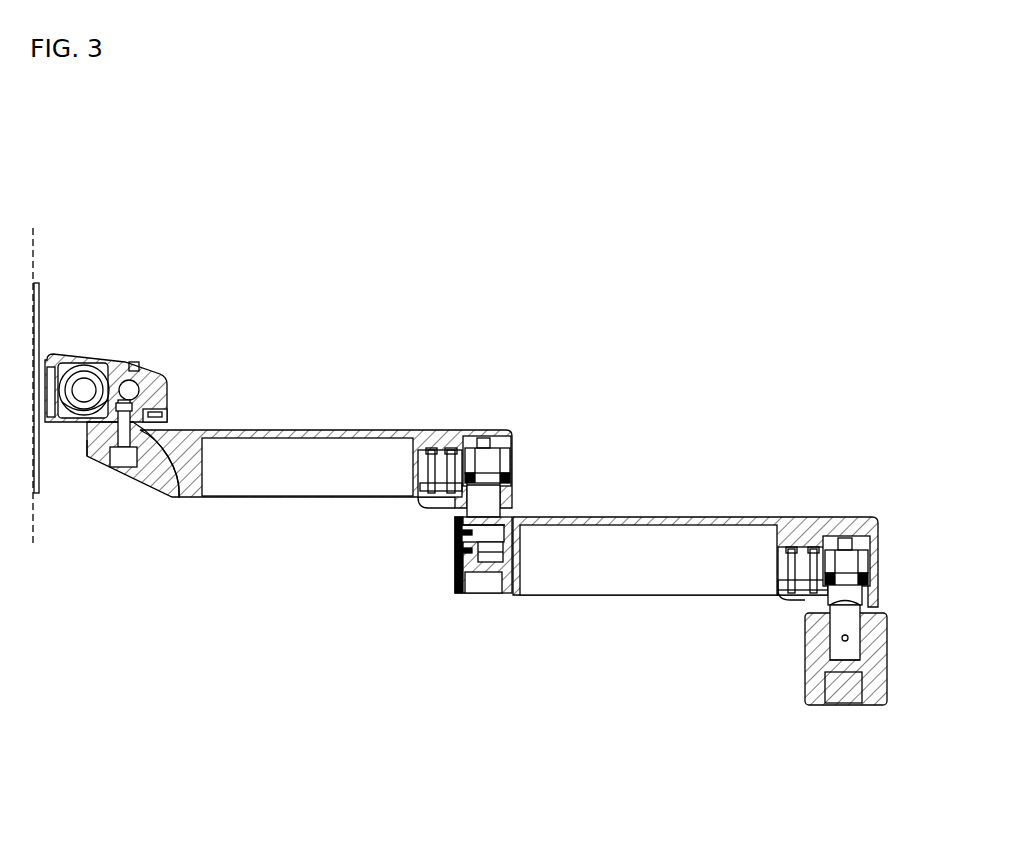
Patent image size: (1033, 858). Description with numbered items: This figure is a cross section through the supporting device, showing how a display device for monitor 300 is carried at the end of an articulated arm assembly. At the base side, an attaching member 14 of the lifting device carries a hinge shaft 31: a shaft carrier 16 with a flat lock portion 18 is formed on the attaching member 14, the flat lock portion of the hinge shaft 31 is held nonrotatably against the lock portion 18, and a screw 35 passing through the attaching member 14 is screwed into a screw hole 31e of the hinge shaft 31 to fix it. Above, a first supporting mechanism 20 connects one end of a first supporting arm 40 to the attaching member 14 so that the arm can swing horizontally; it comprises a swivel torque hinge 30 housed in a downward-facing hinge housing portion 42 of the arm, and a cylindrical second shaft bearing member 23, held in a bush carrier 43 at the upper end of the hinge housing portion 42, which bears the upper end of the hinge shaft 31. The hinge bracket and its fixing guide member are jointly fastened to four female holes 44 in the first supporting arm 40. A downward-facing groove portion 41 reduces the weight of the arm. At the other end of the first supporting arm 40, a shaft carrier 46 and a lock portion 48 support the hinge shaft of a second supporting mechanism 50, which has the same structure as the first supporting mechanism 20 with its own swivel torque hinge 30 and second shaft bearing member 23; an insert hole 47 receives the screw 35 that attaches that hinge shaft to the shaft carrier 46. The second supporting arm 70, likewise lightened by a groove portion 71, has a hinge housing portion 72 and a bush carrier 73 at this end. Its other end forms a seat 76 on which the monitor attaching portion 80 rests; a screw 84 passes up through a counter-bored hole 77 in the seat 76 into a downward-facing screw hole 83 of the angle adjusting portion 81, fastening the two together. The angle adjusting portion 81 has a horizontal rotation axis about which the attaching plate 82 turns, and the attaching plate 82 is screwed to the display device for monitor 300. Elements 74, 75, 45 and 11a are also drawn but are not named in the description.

The display device for monitor 300 is at (42, 248).
The attaching plate 82 is at (39, 335).
The angle adjusting portion 81 is at (97, 368).
The monitor attaching portion 80 is at (183, 382).
The screw hole 83 is at (140, 401).
The seat 76 is at (87, 460).
The screw 84 is at (128, 468).
The hole 77 is at (172, 500).
The second supporting arm 70 is at (310, 432).
The groove portion 71 is at (335, 473).
The bolts 74 is at (437, 457).
The flange 75 is at (428, 500).
The bush carrier 73 is at (500, 437).
The hinge housing portion 72 is at (510, 462).
The swivel torque hinge 30 is at (490, 512).
The insert hole 47 is at (455, 542).
The lock portion 48 is at (503, 522).
The shaft carrier 46 is at (500, 560).
The screw 35 is at (468, 590).
The screw hole 31e is at (493, 572).
The fitting portion 11a is at (462, 527).
The second supporting mechanism 50 is at (400, 527).
The first supporting arm 40 is at (643, 520).
The groove portion 41 is at (622, 568).
The female holes 44 is at (795, 547).
The flange 45 is at (795, 600).
The bush carrier 43 is at (862, 521).
The second shaft bearing member 23 is at (845, 538).
The hinge housing portion 42 is at (862, 560).
The shaft carrier 16 is at (855, 608).
The lock portion 18 is at (848, 637).
The attaching member 14 is at (810, 707).
The first supporting mechanism 20 is at (795, 622).
The hinge shaft 31 is at (853, 650).